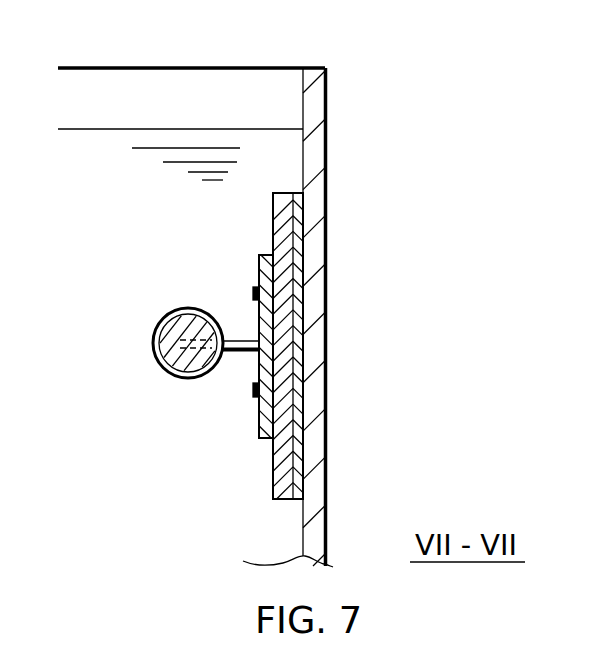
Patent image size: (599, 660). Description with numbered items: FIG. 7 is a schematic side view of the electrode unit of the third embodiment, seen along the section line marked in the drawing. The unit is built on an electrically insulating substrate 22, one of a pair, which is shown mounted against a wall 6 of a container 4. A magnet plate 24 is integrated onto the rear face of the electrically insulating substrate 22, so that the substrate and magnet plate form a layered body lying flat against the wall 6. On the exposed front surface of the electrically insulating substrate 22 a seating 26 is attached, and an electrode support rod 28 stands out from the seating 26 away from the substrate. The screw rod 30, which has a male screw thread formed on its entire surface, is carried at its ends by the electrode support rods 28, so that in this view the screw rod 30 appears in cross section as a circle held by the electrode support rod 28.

The container 4 is at (106, 167).
The container wall 6 is at (327, 140).
The electrically insulating substrate 22 is at (287, 308).
The magnet plate 24 is at (304, 249).
The seating 26 is at (258, 375).
The electrode support rod 28 is at (239, 343).
The screw rod 30 is at (155, 340).